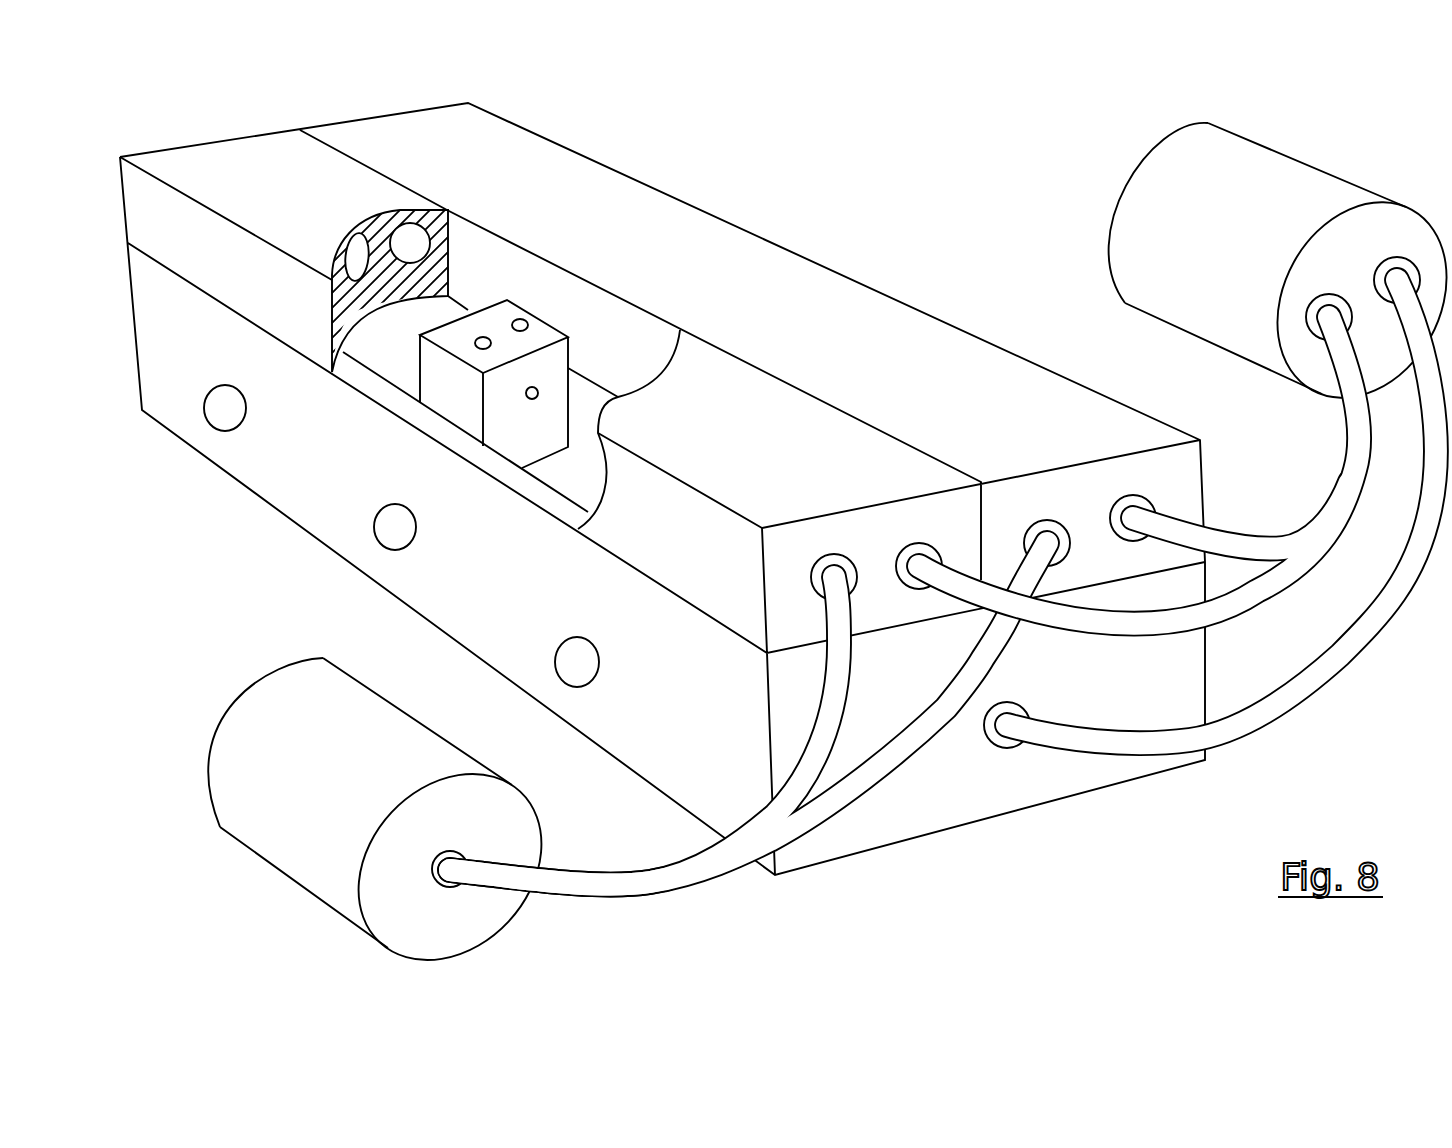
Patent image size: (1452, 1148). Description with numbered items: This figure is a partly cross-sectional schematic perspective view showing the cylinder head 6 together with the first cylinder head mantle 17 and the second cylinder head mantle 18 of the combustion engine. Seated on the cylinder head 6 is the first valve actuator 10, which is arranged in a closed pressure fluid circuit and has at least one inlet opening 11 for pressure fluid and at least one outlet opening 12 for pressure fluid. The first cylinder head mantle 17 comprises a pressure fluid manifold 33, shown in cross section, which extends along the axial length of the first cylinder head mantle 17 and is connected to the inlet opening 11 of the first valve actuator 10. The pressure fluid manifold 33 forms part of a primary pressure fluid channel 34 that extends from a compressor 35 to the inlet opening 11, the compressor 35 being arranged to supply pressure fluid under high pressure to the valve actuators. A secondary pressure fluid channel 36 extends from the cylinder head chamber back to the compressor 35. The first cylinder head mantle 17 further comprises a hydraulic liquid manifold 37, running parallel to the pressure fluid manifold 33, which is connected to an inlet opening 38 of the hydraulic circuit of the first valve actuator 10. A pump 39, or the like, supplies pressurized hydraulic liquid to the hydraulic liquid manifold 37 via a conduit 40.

The cylinder head 6 is at (272, 467).
The first valve actuator 10 is at (440, 421).
The inlet opening 11 is at (521, 323).
The outlet opening 12 is at (538, 394).
The first cylinder head mantle 17 is at (235, 152).
The second cylinder head mantle 18 is at (395, 132).
The pressure fluid manifold 33 is at (410, 243).
The primary pressure fluid channel 34 is at (1311, 505).
The compressor 35 is at (1317, 185).
The secondary pressure fluid channel 36 is at (1334, 685).
The hydraulic liquid manifold 37 is at (357, 260).
The inlet opening 38 is at (482, 340).
The pump 39 is at (305, 692).
The conduit 40 is at (650, 868).